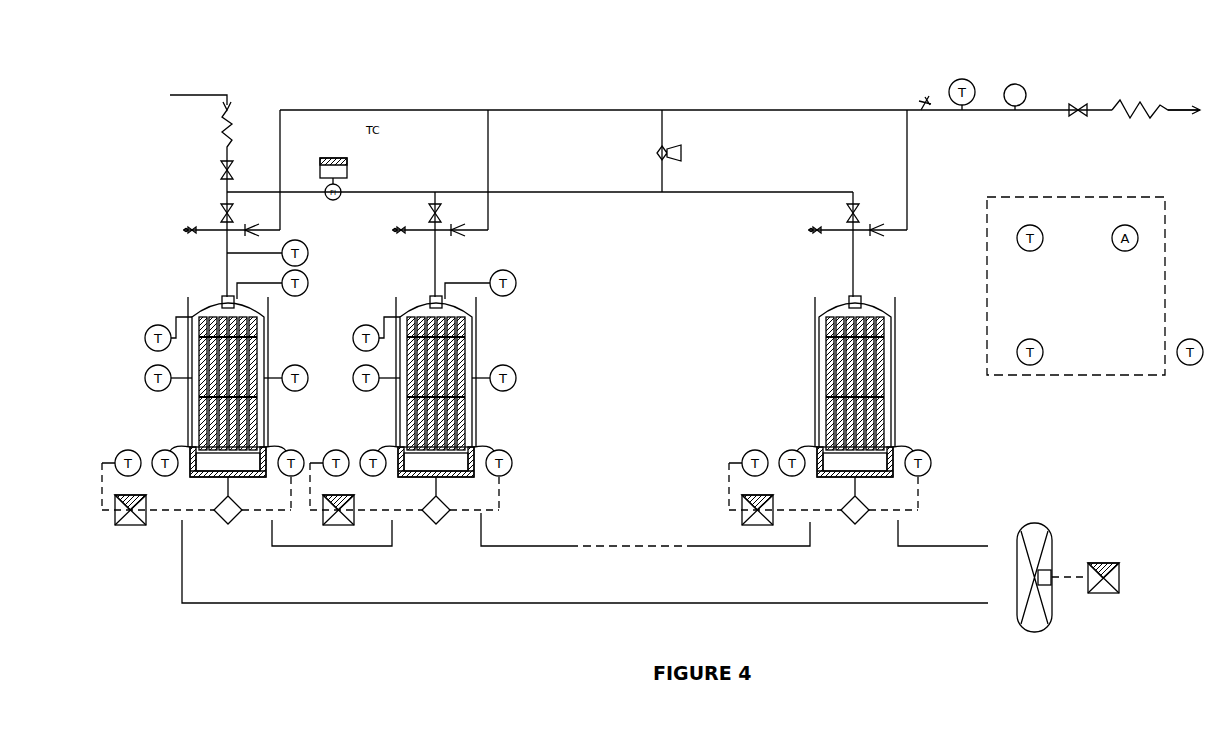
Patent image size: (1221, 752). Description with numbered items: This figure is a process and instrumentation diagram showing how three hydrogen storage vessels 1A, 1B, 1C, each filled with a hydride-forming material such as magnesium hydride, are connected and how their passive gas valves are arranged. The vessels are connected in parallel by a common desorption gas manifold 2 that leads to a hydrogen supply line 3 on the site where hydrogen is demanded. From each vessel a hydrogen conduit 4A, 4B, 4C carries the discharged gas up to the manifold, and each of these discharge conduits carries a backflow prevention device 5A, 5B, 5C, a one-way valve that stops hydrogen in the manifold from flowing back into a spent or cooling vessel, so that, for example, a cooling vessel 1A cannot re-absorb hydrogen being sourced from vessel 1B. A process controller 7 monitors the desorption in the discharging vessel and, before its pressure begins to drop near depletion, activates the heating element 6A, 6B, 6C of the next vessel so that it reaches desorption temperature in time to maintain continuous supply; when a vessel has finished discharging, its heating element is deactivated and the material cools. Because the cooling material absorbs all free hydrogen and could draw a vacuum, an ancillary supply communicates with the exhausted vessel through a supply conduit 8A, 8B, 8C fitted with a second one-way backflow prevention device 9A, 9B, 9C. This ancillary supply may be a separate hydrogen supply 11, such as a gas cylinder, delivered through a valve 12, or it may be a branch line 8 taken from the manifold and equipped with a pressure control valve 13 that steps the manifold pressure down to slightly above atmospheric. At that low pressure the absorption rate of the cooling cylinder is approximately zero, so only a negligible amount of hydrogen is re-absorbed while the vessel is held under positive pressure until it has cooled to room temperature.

The hydrogen storage vessel 1A is at (188, 420).
The hydrogen storage vessel 1B is at (478, 402).
The hydrogen storage vessel 1C is at (815, 366).
The common desorption gas manifold 2 is at (676, 110).
The hydrogen supply line 3 is at (1130, 98).
The hydrogen conduit 4A is at (281, 158).
The hydrogen conduit 4B is at (489, 153).
The hydrogen conduit 4C is at (908, 190).
The backflow prevention device 5A is at (262, 236).
The backflow prevention device 5B is at (465, 234).
The backflow prevention device 5C is at (885, 234).
The heating element 6A is at (255, 478).
The heating element 6B is at (465, 478).
The heating element 6C is at (885, 478).
The process controller 7 is at (987, 310).
The branch line 8 is at (664, 186).
The supply conduit 8A is at (227, 192).
The supply conduit 8B is at (437, 200).
The supply conduit 8C is at (854, 200).
The backflow prevention device 9A is at (230, 218).
The backflow prevention device 9B is at (428, 218).
The backflow prevention device 9C is at (858, 218).
The separate hydrogen supply 11 is at (222, 138).
The valve 12 is at (222, 168).
The pressure control valve 13 is at (668, 150).